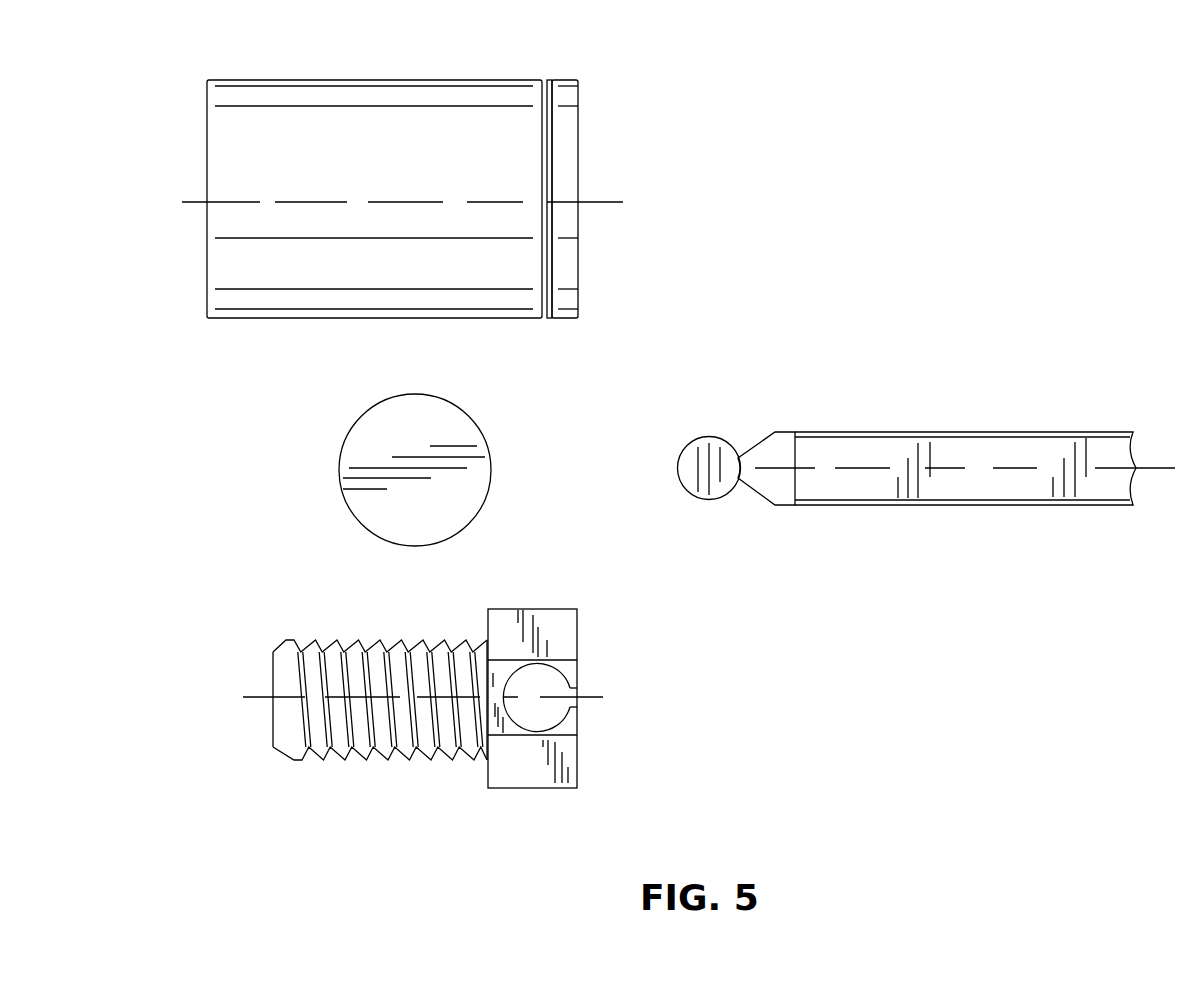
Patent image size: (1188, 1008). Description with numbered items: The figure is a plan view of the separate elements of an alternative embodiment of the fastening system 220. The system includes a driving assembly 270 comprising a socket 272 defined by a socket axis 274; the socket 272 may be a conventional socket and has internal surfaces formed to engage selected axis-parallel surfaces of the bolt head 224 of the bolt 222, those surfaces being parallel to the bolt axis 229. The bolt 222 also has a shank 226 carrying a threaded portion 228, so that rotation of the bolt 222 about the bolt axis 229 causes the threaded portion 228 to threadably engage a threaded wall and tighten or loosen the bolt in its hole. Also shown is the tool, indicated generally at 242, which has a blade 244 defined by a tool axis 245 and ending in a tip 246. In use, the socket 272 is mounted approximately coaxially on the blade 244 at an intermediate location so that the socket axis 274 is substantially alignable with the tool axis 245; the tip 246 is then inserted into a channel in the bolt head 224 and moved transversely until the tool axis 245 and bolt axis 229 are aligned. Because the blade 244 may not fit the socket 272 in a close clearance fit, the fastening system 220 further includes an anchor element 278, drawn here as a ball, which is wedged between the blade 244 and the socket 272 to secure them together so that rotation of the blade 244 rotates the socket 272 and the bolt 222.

The fastening system 220 is at (1004, 171).
The bolt 222 is at (797, 432).
The bolt head 224 is at (551, 607).
The shank 226 is at (380, 711).
The threaded portion 228 is at (325, 757).
The bolt axis 229 is at (260, 697).
The rod 242 is at (927, 479).
The blade 244 is at (1062, 435).
The tool axis 245 is at (1007, 468).
The tip 246 is at (698, 450).
The driving assembly 270 is at (206, 409).
The socket 272 is at (405, 70).
The socket axis 274 is at (598, 198).
The anchor element 278 is at (448, 419).